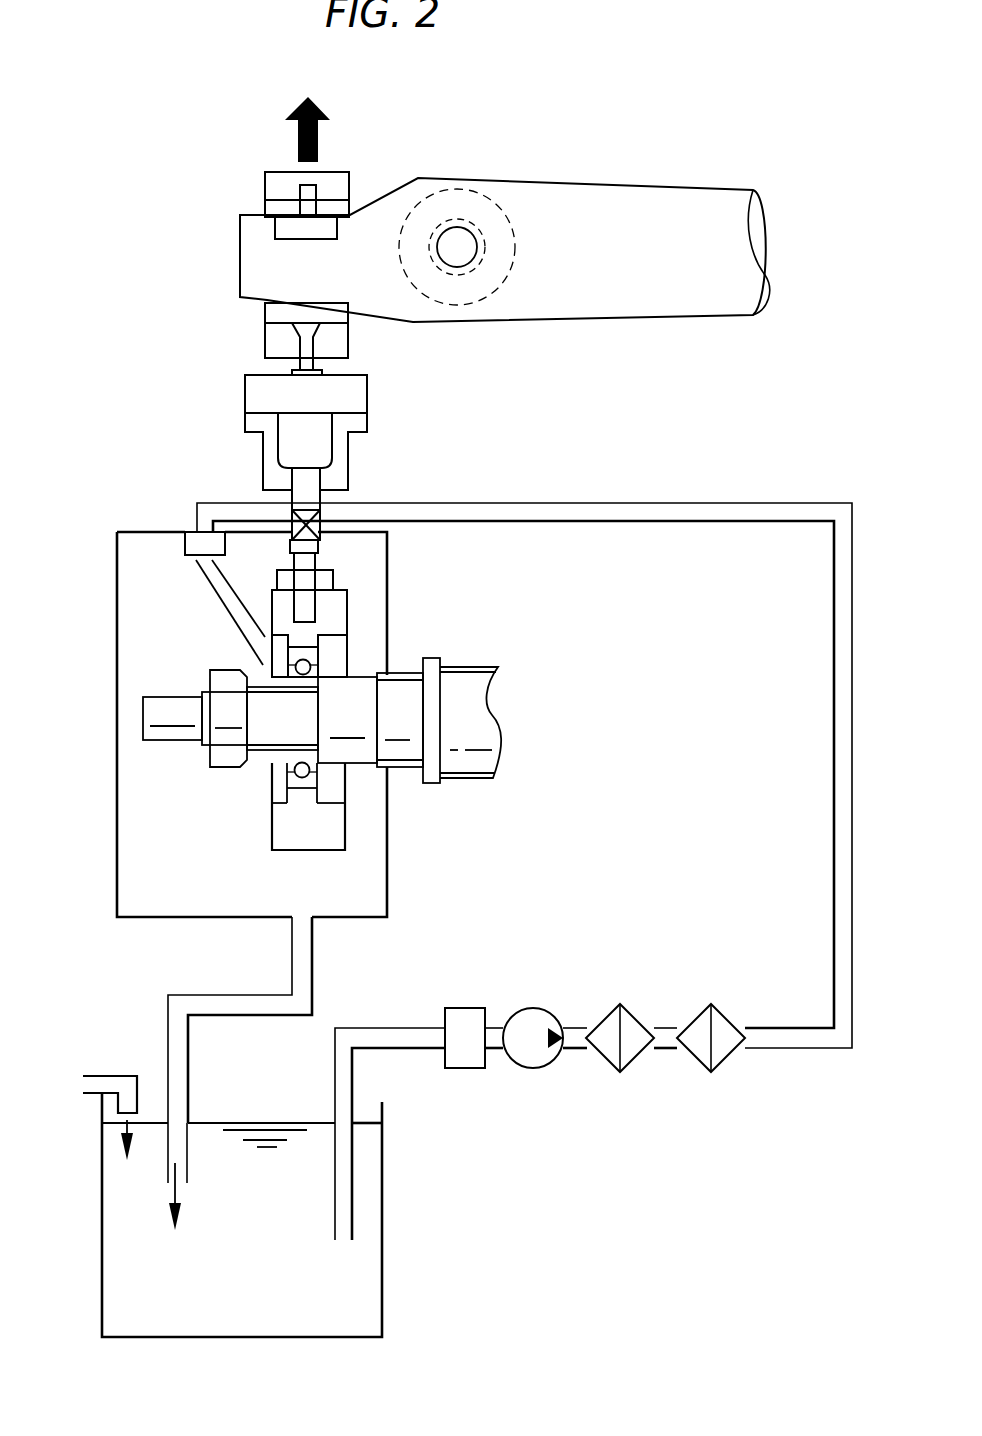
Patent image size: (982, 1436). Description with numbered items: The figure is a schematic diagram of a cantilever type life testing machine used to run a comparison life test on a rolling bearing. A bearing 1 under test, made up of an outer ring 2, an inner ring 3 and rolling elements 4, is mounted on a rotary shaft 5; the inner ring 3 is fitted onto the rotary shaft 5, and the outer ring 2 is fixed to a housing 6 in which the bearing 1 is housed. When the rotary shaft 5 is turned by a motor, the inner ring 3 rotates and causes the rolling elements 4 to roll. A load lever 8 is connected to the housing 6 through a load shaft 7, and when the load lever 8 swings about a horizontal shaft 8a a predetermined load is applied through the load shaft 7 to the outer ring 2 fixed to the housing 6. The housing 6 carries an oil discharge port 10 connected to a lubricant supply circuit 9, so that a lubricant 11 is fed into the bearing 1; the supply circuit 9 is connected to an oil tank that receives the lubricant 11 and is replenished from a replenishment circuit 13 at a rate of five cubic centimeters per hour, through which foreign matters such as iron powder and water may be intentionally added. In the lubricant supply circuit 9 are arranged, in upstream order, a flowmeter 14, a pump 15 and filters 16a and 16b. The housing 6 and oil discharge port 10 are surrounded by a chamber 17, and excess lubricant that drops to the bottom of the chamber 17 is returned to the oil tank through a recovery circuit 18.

The bearing 1 is at (312, 636).
The outer ring 2 is at (302, 790).
The inner ring 3 is at (290, 762).
The rolling elements 4 is at (297, 663).
The rotary shaft 5 is at (467, 677).
The housing 6 is at (288, 840).
The load shaft 7 is at (305, 488).
The load lever 8 is at (605, 207).
The horizontal shaft 8a is at (453, 250).
The lubricant supply circuit 9 is at (652, 503).
The oil discharge port 10 is at (215, 600).
The lubricant 11 is at (353, 1285).
The replenishment circuit 13 is at (103, 1083).
The flowmeter 14 is at (457, 1018).
The pump 15 is at (525, 1055).
The filter 16a is at (603, 1030).
The filter 16b is at (697, 1030).
The chamber 17 is at (115, 617).
The recovery circuit 18 is at (243, 1008).